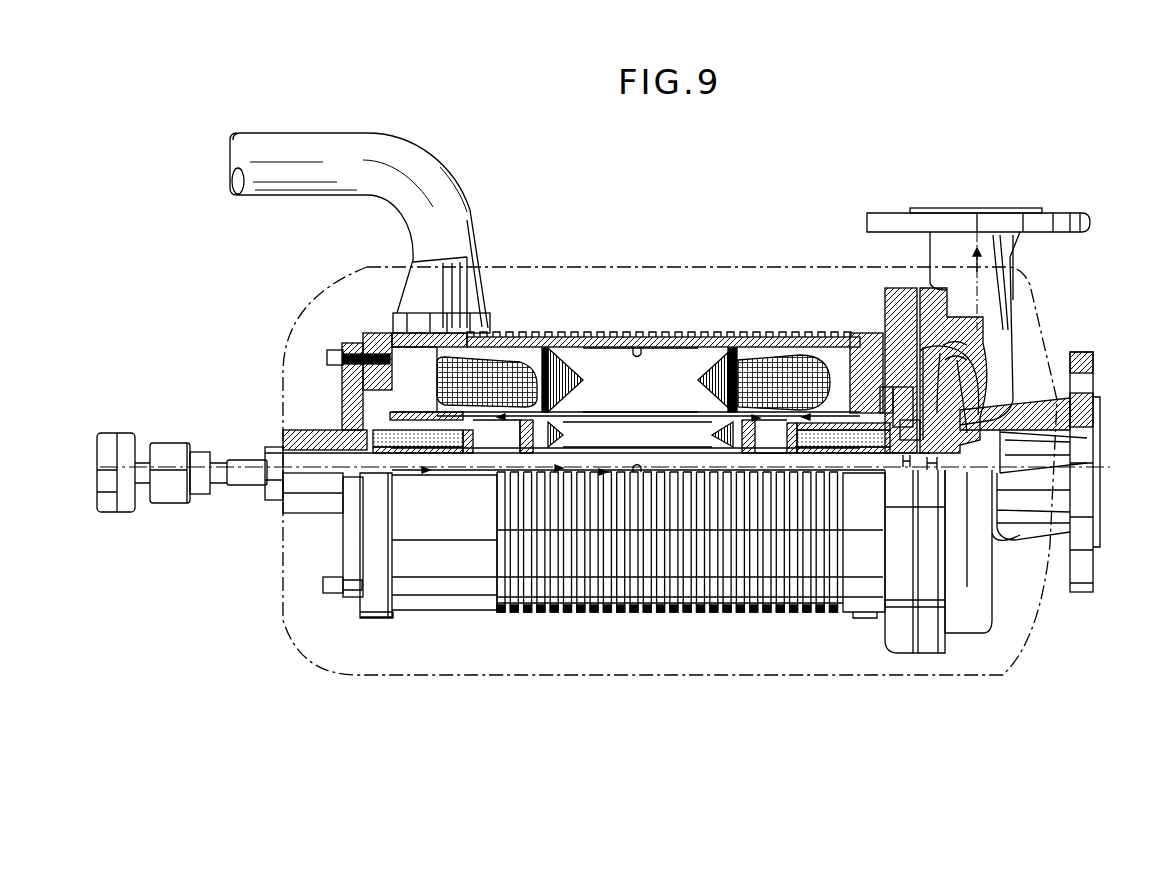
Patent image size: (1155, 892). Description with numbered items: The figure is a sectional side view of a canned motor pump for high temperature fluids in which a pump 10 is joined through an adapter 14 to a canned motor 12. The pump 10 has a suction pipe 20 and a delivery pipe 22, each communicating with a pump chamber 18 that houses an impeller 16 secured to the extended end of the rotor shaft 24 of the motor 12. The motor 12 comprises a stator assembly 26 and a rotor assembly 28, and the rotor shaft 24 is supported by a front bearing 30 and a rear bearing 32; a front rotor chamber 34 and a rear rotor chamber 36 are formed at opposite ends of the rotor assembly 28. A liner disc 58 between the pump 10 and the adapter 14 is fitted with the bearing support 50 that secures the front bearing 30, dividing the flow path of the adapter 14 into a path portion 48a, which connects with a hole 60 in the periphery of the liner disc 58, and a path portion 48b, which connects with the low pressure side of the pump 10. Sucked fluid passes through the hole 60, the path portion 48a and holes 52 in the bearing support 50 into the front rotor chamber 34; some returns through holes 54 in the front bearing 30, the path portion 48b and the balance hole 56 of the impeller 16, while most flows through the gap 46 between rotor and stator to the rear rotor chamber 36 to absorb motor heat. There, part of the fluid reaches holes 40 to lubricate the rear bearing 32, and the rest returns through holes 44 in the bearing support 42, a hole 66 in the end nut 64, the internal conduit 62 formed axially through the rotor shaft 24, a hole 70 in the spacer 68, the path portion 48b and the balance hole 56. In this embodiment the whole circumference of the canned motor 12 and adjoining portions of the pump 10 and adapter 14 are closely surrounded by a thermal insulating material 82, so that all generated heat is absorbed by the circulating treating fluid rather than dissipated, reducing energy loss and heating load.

The pump 10 is at (975, 310).
The canned motor 12 is at (457, 597).
The adapter 14 is at (905, 405).
The impeller 16 is at (965, 360).
The pump chamber 18 is at (957, 387).
The suction pipe 20 is at (1095, 405).
The delivery pipe 22 is at (990, 215).
The rotor shaft 24 is at (833, 473).
The stator assembly 26 is at (568, 355).
The rotor assembly 28 is at (632, 430).
The front bearing 30 is at (843, 455).
The rear bearing 32 is at (408, 420).
The front rotor chamber 34 is at (777, 433).
The rear rotor chamber 36 is at (497, 433).
The holes 40 is at (417, 452).
The bearing support 42 is at (365, 410).
The holes 44 is at (360, 432).
The gap 46 is at (598, 413).
The path portion 48a is at (868, 412).
The path portion 48b is at (910, 540).
The bearing support 50 is at (810, 410).
The holes 52 is at (865, 415).
The holes 54 is at (805, 453).
The balance hole 56 is at (1058, 455).
The liner disc 58 is at (967, 380).
The hole 60 is at (930, 370).
The internal conduit 62 is at (650, 467).
The end nut 64 is at (283, 427).
The hole 66 is at (332, 475).
The spacer 68 is at (993, 533).
The hole 70 is at (957, 623).
The thermal insulating material 82 is at (650, 675).